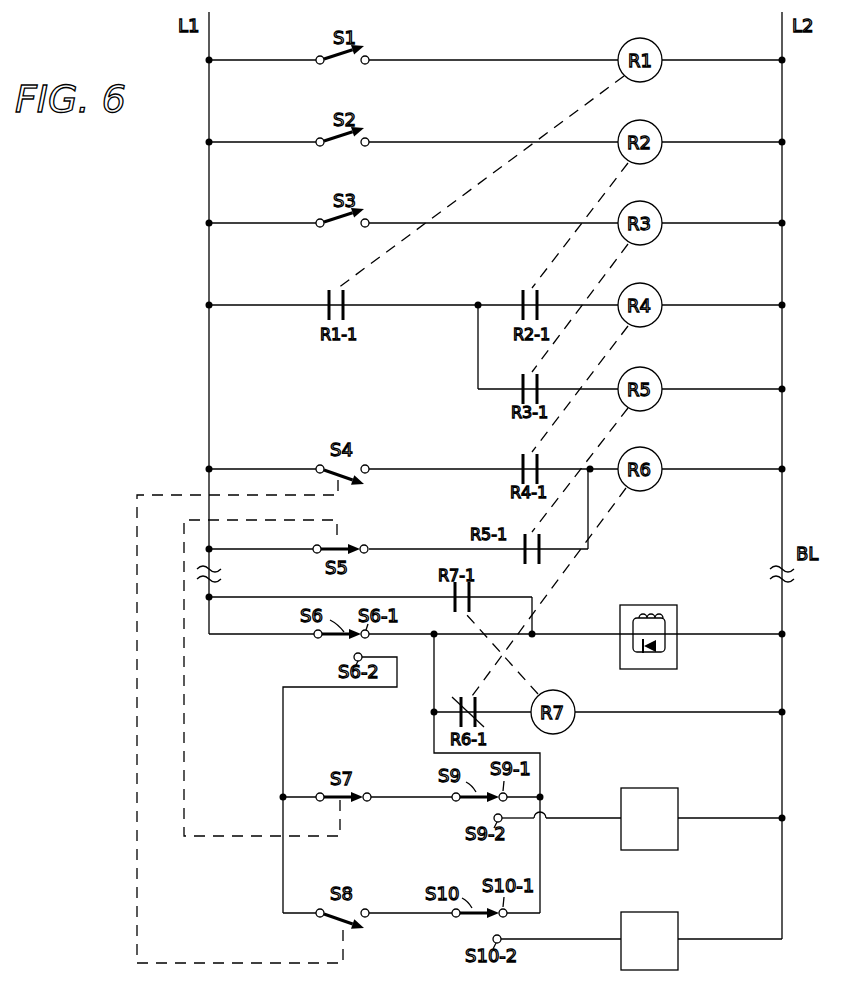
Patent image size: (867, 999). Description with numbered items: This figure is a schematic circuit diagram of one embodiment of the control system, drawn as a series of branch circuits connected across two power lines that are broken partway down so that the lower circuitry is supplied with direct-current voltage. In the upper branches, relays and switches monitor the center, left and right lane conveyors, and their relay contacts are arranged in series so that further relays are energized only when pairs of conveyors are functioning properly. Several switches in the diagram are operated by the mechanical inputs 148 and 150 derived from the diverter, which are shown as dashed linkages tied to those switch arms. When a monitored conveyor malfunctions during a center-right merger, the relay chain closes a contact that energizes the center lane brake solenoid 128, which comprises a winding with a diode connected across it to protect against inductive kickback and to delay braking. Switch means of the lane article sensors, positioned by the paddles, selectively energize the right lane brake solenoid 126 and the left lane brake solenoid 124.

The left lane brake solenoid 124 is at (678, 915).
The right lane brake solenoid 126 is at (672, 790).
The center lane brake solenoid 128 is at (670, 604).
The mechanical input 148 is at (137, 738).
The mechanical input 150 is at (184, 700).